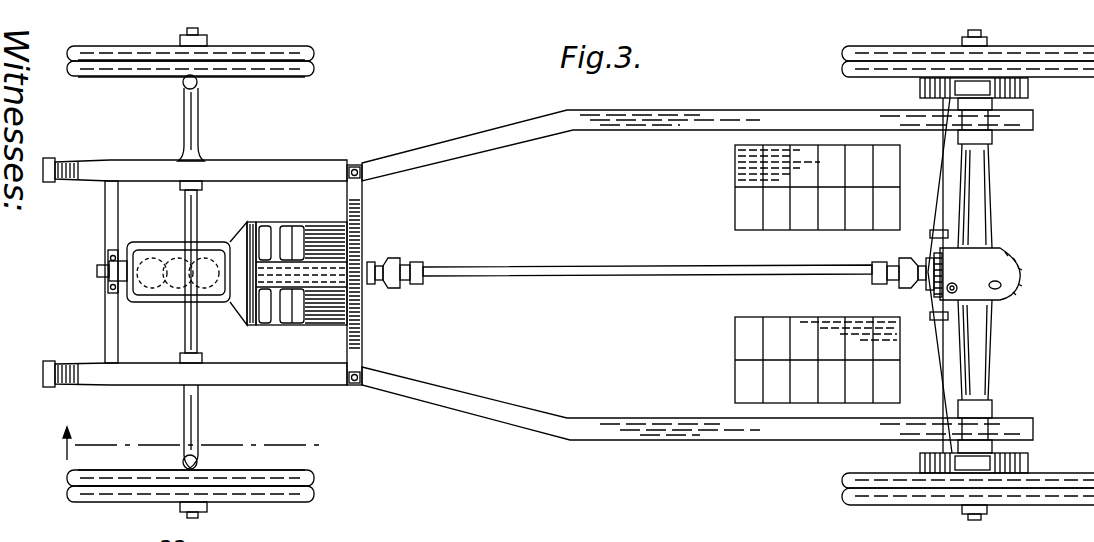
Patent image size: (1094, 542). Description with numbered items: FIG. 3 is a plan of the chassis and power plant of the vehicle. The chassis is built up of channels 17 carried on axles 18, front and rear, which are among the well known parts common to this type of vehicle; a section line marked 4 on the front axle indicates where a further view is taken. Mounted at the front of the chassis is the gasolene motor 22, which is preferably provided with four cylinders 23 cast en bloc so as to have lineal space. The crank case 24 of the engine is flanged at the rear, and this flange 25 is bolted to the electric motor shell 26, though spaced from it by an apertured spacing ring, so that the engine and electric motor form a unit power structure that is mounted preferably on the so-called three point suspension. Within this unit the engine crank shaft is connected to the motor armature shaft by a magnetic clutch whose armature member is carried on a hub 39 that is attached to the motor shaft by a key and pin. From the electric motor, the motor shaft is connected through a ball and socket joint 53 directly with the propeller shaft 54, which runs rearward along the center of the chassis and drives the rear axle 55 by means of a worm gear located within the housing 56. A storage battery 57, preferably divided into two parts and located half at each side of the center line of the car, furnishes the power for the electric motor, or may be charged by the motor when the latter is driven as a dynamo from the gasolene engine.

The channels 17 is at (76, 181).
The axles 18 is at (192, 439).
The section line 4- 4 is at (180, 443).
The gasolene motor 22 is at (165, 302).
The cylinders 23 is at (186, 260).
The crank case 24 is at (216, 303).
The flange 25 is at (244, 236).
The electric motor shell 26 is at (330, 314).
The hub 39 is at (287, 240).
The ball and socket joint 53 is at (384, 271).
The propeller shaft 54 is at (553, 278).
The rear axle 55 is at (974, 358).
The housing 56 is at (987, 262).
The storage battery 57 is at (828, 223).